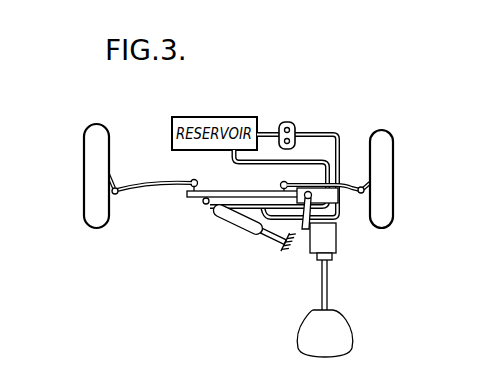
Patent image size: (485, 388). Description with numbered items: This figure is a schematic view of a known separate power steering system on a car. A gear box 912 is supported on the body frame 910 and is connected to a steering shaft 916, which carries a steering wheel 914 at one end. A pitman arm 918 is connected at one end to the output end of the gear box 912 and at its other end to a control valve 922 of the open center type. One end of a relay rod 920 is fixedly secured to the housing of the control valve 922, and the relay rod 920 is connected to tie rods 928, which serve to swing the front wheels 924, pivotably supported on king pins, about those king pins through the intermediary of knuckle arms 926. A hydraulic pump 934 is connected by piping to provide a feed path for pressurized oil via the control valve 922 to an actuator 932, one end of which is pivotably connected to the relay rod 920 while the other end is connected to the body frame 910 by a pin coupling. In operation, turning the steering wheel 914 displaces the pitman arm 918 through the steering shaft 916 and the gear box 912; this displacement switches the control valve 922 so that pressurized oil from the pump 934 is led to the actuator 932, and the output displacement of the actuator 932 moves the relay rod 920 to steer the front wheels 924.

The body frame 910 is at (287, 251).
The gear box 912 is at (337, 247).
The steering wheel 914 is at (353, 345).
The steering shaft 916 is at (327, 288).
The pitman arm 918 is at (303, 238).
The relay rod 920 is at (251, 192).
The control valve 922 is at (340, 203).
The front wheels 924 is at (89, 129).
The knuckle arms 926 is at (111, 182).
The tie rods 928 is at (150, 190).
The actuator 932 is at (225, 226).
The hydraulic pump 934 is at (288, 119).